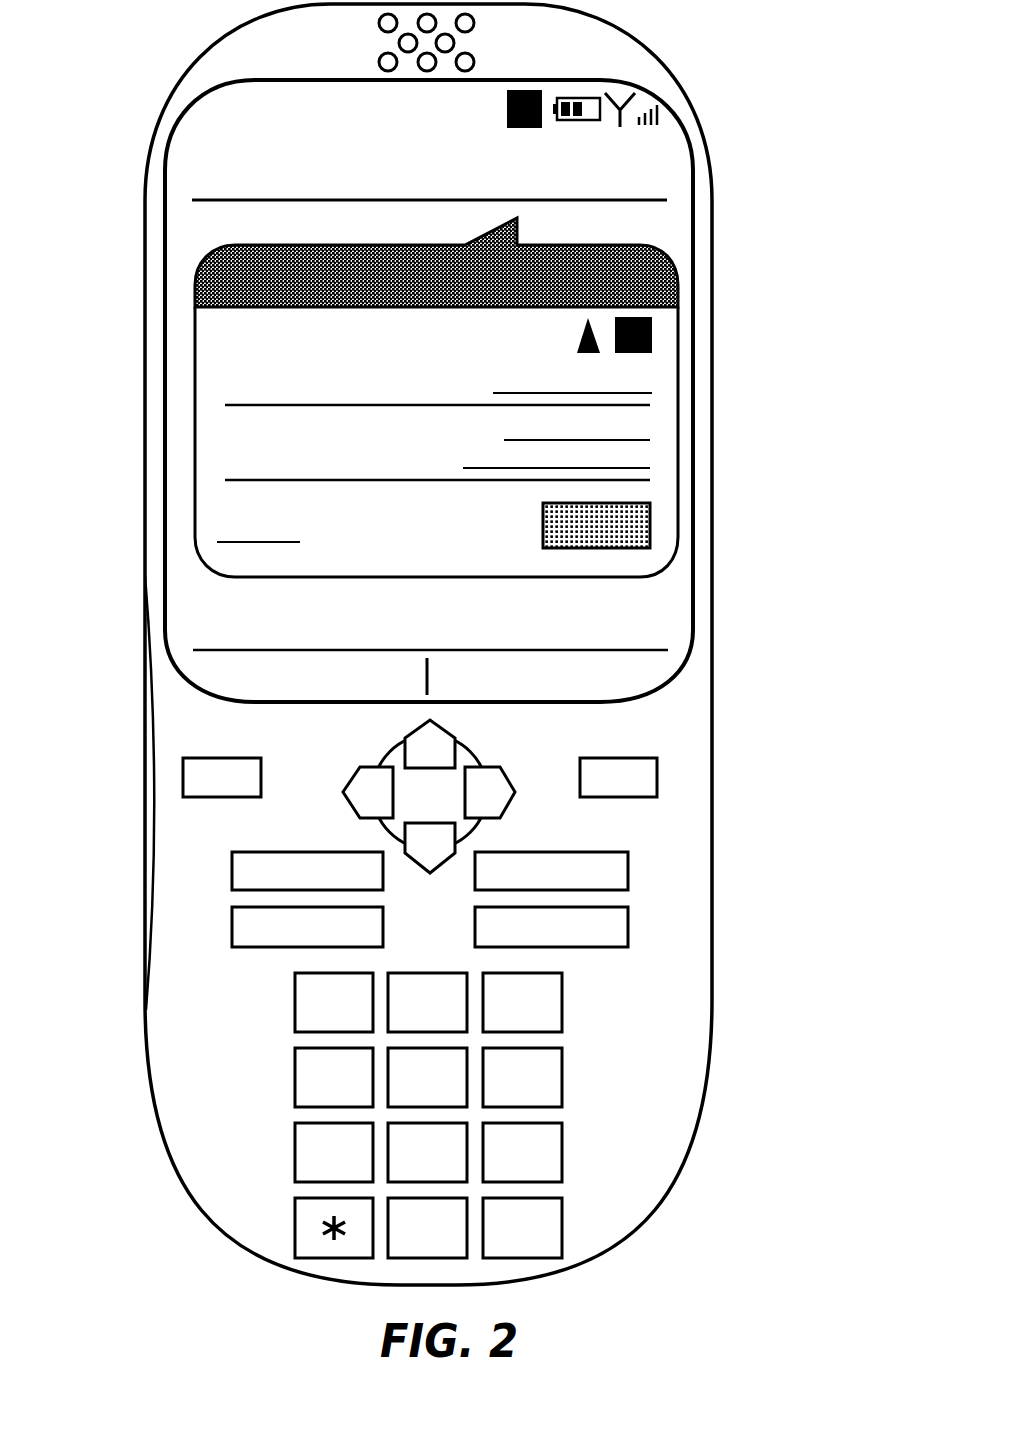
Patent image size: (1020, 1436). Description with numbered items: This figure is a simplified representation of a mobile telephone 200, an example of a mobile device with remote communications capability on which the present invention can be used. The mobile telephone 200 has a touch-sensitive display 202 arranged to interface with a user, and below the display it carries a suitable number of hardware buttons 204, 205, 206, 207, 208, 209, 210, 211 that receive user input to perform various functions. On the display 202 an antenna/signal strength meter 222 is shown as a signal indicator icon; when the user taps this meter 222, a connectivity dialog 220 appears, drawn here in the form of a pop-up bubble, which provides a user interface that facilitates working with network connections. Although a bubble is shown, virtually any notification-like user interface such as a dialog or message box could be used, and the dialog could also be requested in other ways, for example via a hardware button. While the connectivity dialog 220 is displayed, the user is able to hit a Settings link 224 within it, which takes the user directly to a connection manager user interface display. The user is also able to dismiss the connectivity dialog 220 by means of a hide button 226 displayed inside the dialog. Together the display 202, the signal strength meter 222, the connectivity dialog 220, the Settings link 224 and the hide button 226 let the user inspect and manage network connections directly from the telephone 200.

The mobile telephone 200 is at (716, 486).
The touch-sensitive display 202 is at (217, 155).
The hardware button 204 is at (343, 780).
The hardware button 205 is at (246, 931).
The hardware button 206 is at (612, 931).
The hardware button 207 is at (246, 866).
The hardware button 208 is at (612, 866).
The hardware button 209 is at (193, 765).
The hardware button 210 is at (635, 772).
The hardware button 211 is at (584, 1250).
The connectivity dialog 220 is at (364, 428).
The antenna/signal strength meter 222 is at (641, 139).
The Settings link 224 is at (224, 514).
The hide button 226 is at (587, 552).